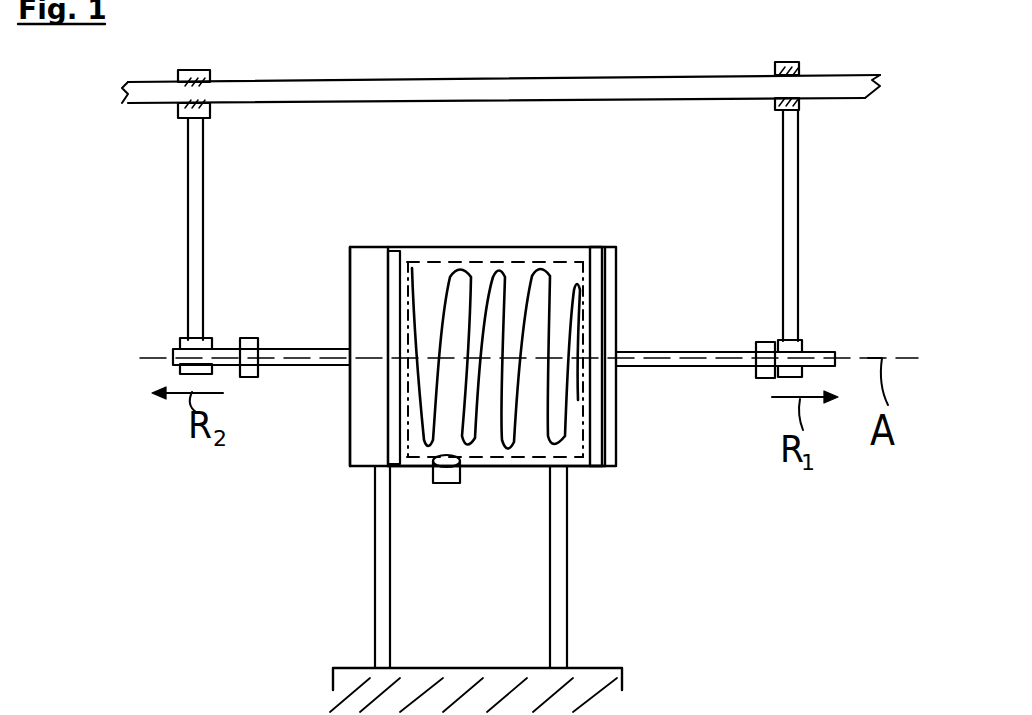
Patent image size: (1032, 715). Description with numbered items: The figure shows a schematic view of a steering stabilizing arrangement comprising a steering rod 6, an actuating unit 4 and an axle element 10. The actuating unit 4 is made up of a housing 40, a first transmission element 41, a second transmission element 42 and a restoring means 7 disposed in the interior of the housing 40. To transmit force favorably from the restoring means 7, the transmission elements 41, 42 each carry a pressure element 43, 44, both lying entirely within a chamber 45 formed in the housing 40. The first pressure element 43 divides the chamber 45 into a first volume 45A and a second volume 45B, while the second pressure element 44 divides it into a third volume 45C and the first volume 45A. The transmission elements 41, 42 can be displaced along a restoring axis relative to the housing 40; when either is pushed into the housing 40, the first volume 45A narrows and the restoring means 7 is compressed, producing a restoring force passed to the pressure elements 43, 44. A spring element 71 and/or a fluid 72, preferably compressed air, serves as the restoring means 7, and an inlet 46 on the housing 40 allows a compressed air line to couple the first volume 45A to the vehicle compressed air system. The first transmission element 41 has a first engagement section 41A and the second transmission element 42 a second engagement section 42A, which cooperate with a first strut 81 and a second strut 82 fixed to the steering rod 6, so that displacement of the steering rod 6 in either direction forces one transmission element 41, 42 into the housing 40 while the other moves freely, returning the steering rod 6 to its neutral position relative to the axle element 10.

The actuating unit 4 is at (567, 232).
The steering rod 6 is at (410, 90).
The restoring means 7 is at (575, 445).
The axle element 10 is at (622, 680).
The housing 40 is at (498, 468).
The first transmission element 41 is at (697, 366).
The first engagement section 41A is at (767, 342).
The second transmission element 42 is at (292, 366).
The second engagement section 42A is at (247, 337).
The first pressure element 43 is at (600, 287).
The second pressure element 44 is at (393, 250).
The chamber 45 is at (420, 450).
The first volume 45A is at (581, 470).
The second volume 45B is at (610, 445).
The third volume 45C is at (350, 275).
The inlet 46 is at (450, 484).
The spring element 71 is at (450, 262).
The fluid 72 is at (515, 262).
The first strut 81 is at (792, 183).
The second strut 82 is at (190, 201).